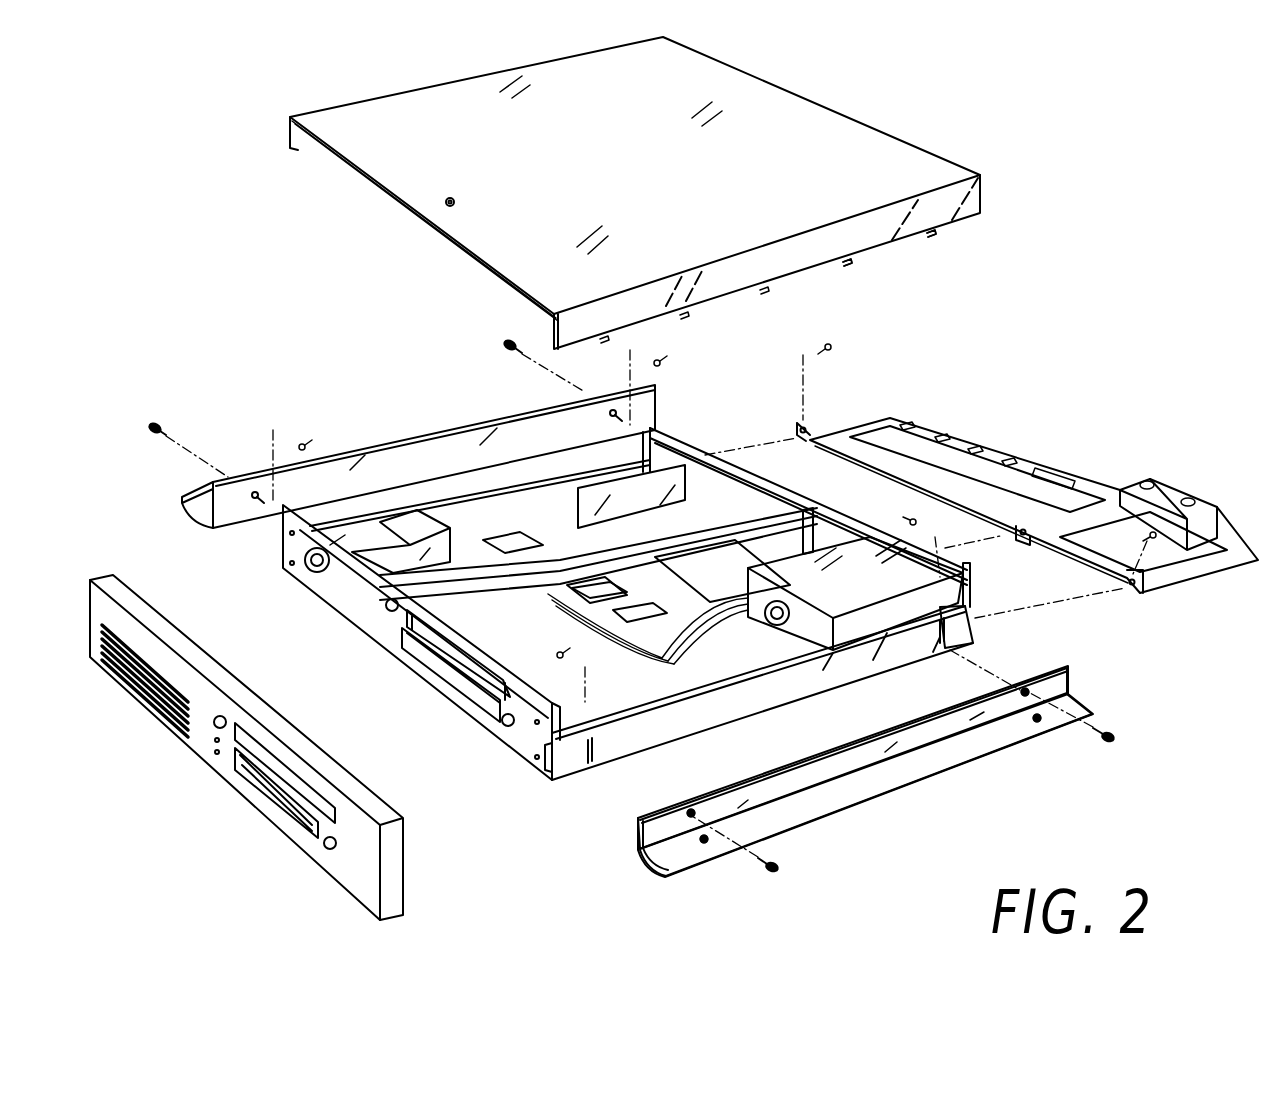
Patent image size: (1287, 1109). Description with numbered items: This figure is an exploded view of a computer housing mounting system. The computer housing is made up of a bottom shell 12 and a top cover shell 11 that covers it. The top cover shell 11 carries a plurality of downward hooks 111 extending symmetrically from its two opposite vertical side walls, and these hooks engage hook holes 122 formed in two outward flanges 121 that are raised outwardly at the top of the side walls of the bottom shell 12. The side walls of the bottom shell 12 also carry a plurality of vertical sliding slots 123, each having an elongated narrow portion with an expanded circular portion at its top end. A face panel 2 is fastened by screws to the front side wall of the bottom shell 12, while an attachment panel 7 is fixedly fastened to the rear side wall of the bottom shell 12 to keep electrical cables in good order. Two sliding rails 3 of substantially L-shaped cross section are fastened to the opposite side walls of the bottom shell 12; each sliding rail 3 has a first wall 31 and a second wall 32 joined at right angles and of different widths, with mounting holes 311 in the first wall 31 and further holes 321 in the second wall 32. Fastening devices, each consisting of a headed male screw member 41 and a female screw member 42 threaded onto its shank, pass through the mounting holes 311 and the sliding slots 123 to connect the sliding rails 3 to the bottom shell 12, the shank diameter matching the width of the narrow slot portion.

The top cover shell 11 is at (829, 119).
The downward hooks 111 is at (858, 259).
The face panel 2 is at (248, 693).
The sliding rails 3 is at (443, 447).
The first wall 31 is at (830, 760).
The second wall 32 is at (900, 772).
The mounting holes 311 is at (693, 810).
The rail flange hole 321 is at (706, 843).
The headed male screw member 41 is at (308, 440).
The female screw member 42 is at (153, 422).
The attachment panel 7 is at (1105, 483).
The bottom shell 12 is at (517, 730).
The outward flanges 121 is at (552, 778).
The hook holes 122 is at (770, 665).
The vertical sliding slots 123 is at (592, 753).